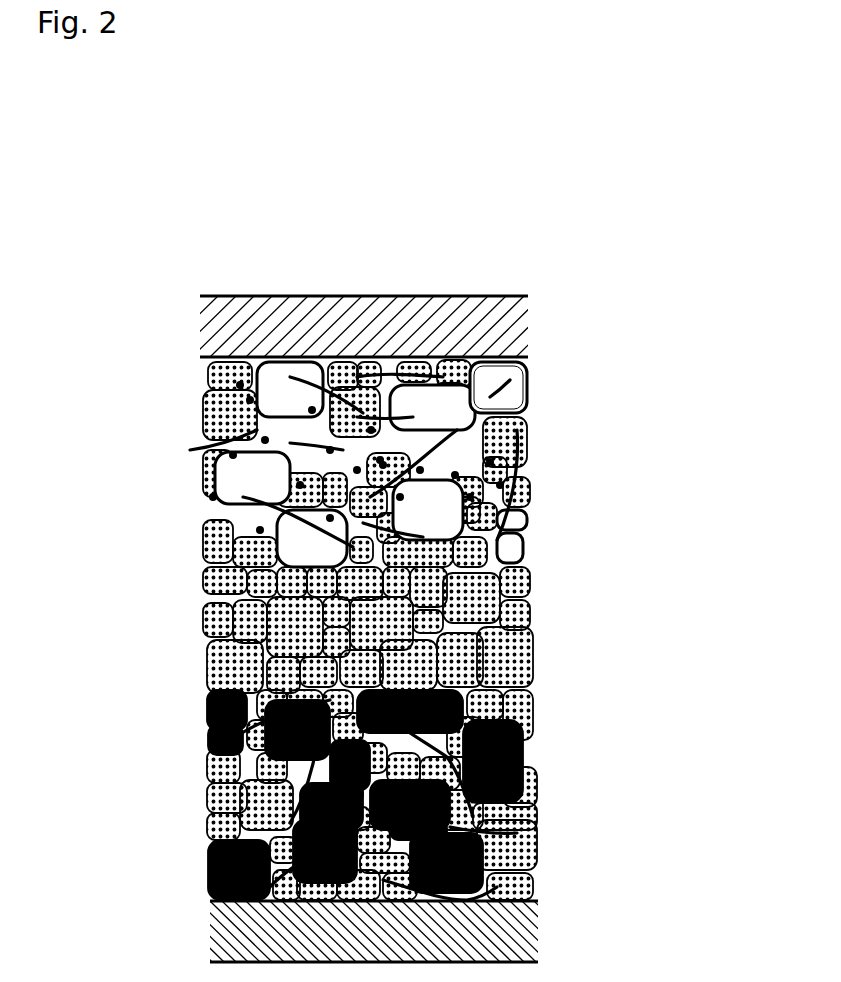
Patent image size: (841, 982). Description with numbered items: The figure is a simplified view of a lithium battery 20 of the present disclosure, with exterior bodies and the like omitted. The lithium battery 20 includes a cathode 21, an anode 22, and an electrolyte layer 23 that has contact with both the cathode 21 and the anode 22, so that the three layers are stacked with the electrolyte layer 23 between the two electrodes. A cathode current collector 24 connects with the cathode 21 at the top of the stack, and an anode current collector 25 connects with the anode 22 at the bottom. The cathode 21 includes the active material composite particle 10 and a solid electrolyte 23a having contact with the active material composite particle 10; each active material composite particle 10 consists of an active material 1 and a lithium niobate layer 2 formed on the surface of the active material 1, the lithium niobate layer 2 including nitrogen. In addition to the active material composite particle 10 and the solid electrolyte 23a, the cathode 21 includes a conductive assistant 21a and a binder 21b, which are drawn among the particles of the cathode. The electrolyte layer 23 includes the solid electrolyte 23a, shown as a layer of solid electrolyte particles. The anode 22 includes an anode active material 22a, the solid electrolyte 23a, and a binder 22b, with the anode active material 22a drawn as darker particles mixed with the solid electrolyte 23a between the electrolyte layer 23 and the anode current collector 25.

The lithium battery 20 is at (452, 160).
The cathode current collector 24 is at (527, 323).
The cathode 21 is at (420, 462).
The active material composite particle 10 is at (386, 430).
The active material 1 is at (510, 380).
The lithium niobate layer 2 is at (528, 400).
The conductive assistant 21a is at (235, 456).
The binder 21b is at (526, 522).
The electrolyte layer 23 is at (642, 632).
The solid electrolyte 23a is at (218, 423).
The anode 22 is at (425, 795).
The anode active material 22a is at (212, 705).
The binder 22b is at (212, 738).
The anode current collector 25 is at (538, 930).